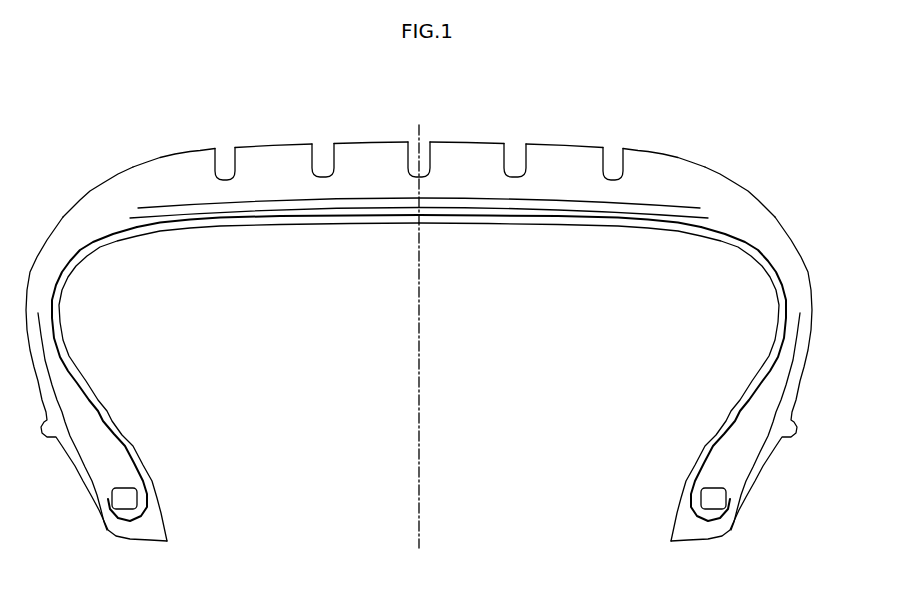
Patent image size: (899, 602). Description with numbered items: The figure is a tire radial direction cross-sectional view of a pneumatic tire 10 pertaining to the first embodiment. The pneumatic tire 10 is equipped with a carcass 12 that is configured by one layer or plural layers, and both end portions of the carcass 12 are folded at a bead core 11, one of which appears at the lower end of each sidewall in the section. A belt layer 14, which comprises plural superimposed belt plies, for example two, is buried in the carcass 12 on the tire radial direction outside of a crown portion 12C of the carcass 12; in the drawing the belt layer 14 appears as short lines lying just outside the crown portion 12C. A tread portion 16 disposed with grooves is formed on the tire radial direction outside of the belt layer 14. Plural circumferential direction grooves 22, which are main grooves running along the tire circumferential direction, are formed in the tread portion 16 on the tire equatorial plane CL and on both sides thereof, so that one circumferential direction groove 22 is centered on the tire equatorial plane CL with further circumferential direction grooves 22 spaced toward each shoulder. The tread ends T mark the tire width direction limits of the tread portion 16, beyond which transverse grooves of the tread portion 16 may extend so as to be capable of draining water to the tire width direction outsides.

The pneumatic tire 10 is at (818, 127).
The bead core 11 is at (128, 499).
The carcass 12 is at (82, 243).
The crown portion 12C is at (387, 217).
The belt layer 14 is at (400, 213).
The tread portion 16 is at (593, 90).
The circumferential direction groove 22 is at (233, 158).
The tread end T is at (133, 163).
The tire equatorial plane CL is at (420, 126).